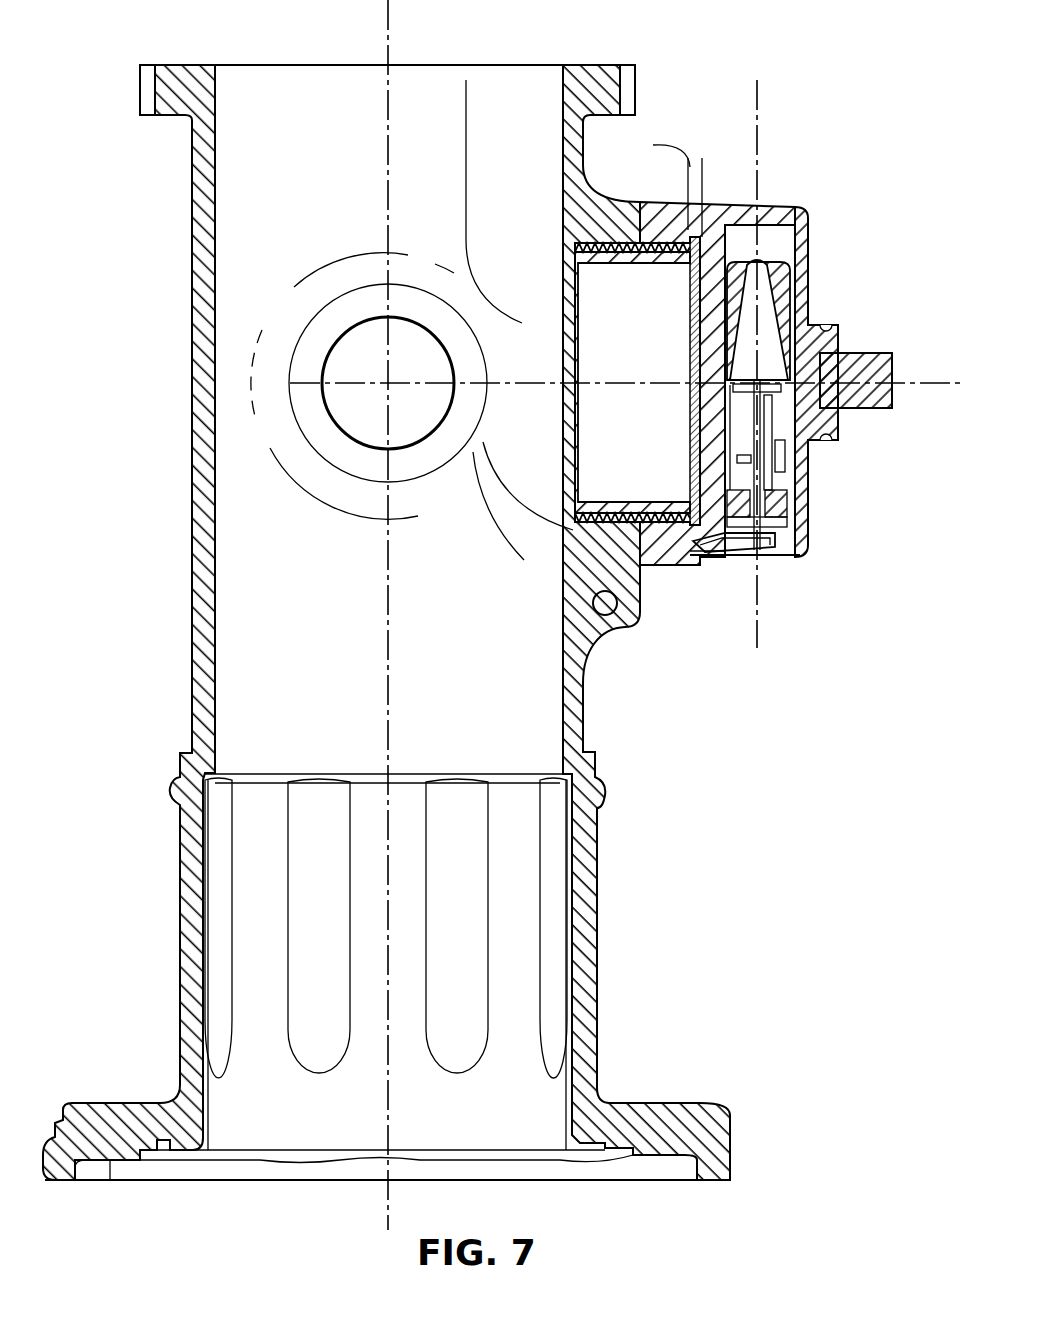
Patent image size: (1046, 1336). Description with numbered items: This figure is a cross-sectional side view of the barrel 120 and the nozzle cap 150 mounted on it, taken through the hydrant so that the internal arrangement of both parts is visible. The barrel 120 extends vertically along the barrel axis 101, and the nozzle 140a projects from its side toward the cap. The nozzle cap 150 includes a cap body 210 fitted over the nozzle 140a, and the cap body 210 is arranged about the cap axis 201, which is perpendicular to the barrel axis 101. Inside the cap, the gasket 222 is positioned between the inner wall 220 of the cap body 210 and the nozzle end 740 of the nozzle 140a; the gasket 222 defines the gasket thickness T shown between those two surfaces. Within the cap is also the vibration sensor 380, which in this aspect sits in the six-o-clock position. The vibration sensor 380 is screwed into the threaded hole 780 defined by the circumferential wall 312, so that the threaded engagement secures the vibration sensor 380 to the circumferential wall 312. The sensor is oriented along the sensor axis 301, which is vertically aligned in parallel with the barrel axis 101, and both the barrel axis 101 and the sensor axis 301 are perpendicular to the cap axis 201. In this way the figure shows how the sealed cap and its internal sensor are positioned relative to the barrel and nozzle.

The barrel axis 101 is at (388, 58).
The barrel 120 is at (192, 415).
The nozzle 140a is at (640, 503).
The nozzle cap 150 is at (745, 210).
The cap body 210 is at (772, 208).
The inner wall 220 is at (700, 280).
The gasket 222 is at (700, 335).
The cap axis 201 is at (933, 385).
The vibration sensor 380 is at (795, 508).
The threaded hole 780 is at (767, 528).
The circumferential wall 312 is at (737, 560).
The nozzle end 740 is at (695, 560).
The sensor axis 301 is at (758, 630).